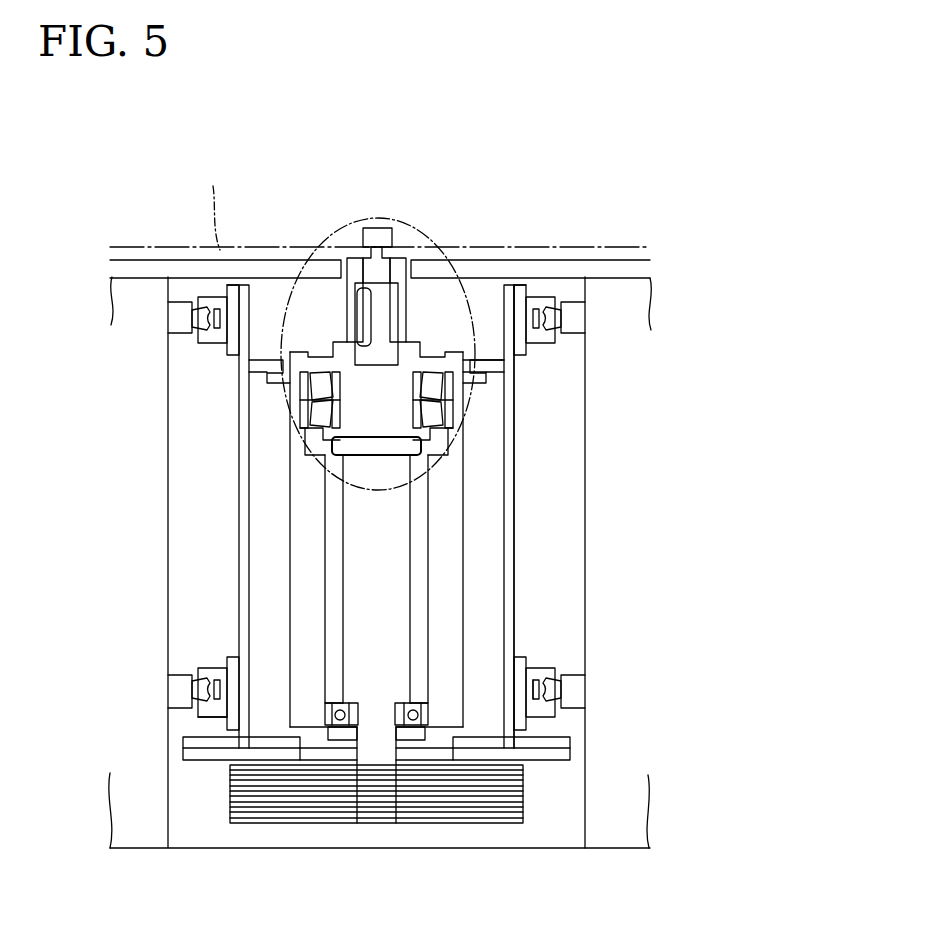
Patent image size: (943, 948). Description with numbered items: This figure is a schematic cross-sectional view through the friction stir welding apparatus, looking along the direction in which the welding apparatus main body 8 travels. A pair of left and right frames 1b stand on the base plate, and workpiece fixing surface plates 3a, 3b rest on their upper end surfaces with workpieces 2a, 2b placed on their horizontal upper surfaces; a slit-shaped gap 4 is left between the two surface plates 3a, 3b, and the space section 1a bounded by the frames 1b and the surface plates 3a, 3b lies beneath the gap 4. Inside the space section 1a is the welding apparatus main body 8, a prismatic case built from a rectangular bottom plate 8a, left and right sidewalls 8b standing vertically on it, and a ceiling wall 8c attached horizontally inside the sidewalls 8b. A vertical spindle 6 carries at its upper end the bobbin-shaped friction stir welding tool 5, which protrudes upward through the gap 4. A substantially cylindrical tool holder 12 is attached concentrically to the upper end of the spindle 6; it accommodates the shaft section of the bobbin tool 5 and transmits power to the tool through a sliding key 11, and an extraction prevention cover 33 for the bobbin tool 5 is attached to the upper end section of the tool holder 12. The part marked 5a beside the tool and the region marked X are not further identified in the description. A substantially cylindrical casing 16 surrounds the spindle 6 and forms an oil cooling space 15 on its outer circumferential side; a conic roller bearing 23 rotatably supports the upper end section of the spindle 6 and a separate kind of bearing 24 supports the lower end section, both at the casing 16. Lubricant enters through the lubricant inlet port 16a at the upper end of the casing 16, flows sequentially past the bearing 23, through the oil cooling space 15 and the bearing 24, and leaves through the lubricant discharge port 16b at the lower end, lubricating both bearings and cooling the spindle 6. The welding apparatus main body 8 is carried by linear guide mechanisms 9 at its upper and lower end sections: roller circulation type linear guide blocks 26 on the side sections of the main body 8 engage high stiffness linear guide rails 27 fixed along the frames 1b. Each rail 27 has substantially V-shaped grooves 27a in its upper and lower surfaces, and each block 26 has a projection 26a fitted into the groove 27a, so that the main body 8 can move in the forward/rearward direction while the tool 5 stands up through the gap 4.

The space section 1a is at (566, 287).
The frame 1b is at (608, 290).
The workpiece 2a is at (658, 247).
The workpiece 2b is at (213, 203).
The workpiece fixing surface plate 3a is at (652, 268).
The workpiece fixing surface plate 3b is at (128, 268).
The gap 4 is at (356, 263).
The friction stir welding tool 5 is at (383, 230).
The elastic member 5a is at (360, 310).
The spindle 6 is at (353, 510).
The welding apparatus main body 8 is at (514, 578).
The bottom plate 8a is at (550, 760).
The sidewall 8b is at (239, 460).
The ceiling wall 8c is at (482, 303).
The linear guide mechanism 9 is at (188, 297).
The sliding key 11 is at (310, 373).
The tool holder 12 is at (432, 305).
The oil cooling space 15 is at (328, 548).
The casing 16 is at (462, 448).
The lubricant inlet port 16a is at (282, 368).
The lubricant discharge port 16b is at (312, 728).
The bearing 23 is at (448, 395).
The bearing 24 is at (415, 727).
The linear guide block 26 is at (213, 343).
The projection 26a is at (192, 694).
The linear guide rail 27 is at (193, 320).
The groove 27a is at (548, 687).
The extraction prevention cover 33 is at (410, 300).
The enlarged portion X is at (395, 490).